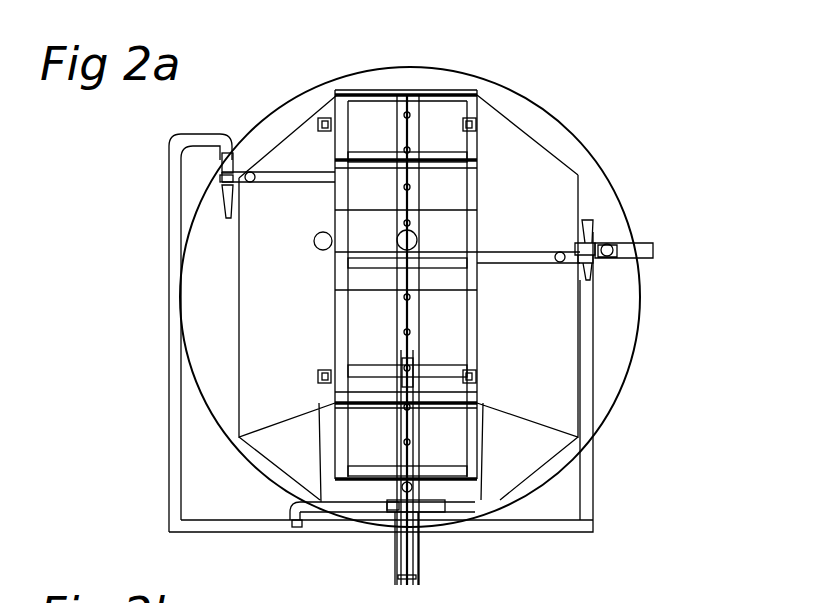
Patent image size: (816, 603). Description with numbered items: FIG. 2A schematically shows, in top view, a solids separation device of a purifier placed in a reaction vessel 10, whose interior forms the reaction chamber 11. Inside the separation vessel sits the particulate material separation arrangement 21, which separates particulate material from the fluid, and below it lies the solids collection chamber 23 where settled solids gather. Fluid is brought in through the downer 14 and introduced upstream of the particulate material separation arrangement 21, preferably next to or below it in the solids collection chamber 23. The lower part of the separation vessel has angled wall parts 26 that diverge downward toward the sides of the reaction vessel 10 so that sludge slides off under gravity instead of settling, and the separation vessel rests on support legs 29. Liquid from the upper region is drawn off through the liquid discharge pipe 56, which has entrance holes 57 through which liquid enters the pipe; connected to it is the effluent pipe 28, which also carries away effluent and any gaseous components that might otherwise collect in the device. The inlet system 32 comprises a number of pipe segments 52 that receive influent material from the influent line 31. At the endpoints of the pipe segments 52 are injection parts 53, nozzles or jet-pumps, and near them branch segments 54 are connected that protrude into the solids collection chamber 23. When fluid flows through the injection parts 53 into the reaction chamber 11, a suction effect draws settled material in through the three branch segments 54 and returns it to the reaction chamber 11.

The reaction vessel 10 is at (602, 170).
The reaction chamber 11 is at (612, 340).
The downer 14 is at (314, 241).
The particulate material separation arrangement 21 is at (440, 122).
The solids collection chamber 23 is at (495, 315).
The angled wall parts 26 is at (239, 380).
The effluent pipe 28 is at (418, 228).
The support legs 29 is at (318, 125).
The influent line 31 is at (395, 573).
The inlet system 32 is at (296, 527).
The pipe segments 52 is at (170, 455).
The injection parts 53 is at (223, 215).
The branch segments 54 is at (290, 180).
The liquid discharge pipe 56 is at (420, 575).
The entrance holes 57 is at (410, 332).